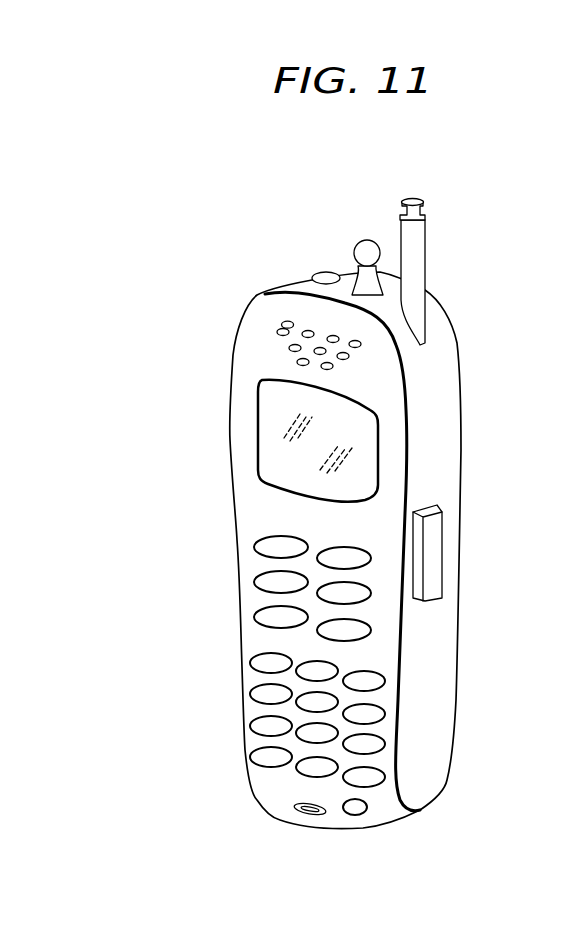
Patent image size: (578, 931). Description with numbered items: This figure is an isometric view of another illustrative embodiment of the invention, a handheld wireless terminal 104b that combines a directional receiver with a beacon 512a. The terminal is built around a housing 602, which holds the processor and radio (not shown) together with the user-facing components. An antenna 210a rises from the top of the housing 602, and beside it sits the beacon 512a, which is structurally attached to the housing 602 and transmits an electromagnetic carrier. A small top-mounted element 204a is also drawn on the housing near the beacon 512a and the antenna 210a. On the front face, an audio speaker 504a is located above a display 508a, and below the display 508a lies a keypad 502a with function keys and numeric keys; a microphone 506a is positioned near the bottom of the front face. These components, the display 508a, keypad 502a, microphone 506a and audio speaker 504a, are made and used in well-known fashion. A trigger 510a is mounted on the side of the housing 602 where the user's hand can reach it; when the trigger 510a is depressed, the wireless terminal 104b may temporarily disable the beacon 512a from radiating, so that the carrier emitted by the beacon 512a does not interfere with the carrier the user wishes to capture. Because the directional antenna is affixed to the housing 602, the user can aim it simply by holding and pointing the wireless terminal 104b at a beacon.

The wireless terminal 104b is at (458, 352).
The antenna 210a is at (423, 213).
The beacon 512a is at (370, 241).
The top button 204a is at (313, 276).
The audio speaker 504a is at (281, 329).
The display 508a is at (258, 425).
The keypad 502a is at (227, 517).
The trigger 510a is at (432, 562).
The microphone 506a is at (302, 814).
The housing 602 is at (342, 820).